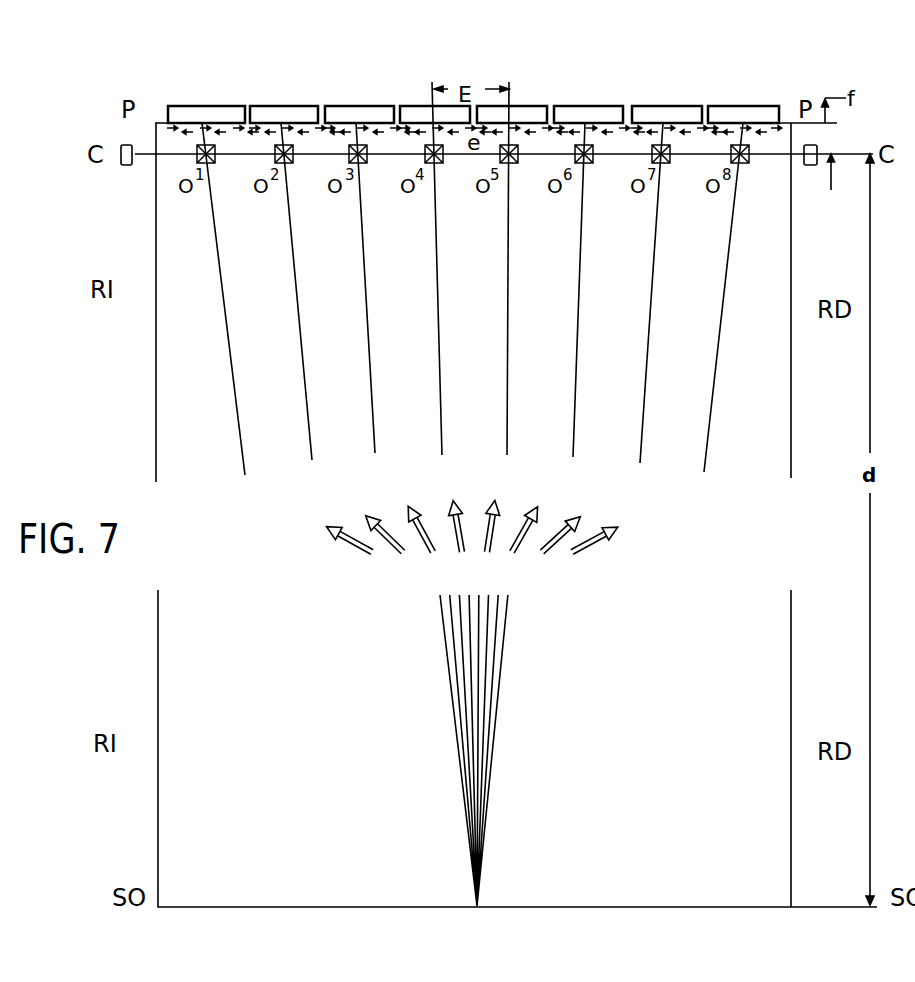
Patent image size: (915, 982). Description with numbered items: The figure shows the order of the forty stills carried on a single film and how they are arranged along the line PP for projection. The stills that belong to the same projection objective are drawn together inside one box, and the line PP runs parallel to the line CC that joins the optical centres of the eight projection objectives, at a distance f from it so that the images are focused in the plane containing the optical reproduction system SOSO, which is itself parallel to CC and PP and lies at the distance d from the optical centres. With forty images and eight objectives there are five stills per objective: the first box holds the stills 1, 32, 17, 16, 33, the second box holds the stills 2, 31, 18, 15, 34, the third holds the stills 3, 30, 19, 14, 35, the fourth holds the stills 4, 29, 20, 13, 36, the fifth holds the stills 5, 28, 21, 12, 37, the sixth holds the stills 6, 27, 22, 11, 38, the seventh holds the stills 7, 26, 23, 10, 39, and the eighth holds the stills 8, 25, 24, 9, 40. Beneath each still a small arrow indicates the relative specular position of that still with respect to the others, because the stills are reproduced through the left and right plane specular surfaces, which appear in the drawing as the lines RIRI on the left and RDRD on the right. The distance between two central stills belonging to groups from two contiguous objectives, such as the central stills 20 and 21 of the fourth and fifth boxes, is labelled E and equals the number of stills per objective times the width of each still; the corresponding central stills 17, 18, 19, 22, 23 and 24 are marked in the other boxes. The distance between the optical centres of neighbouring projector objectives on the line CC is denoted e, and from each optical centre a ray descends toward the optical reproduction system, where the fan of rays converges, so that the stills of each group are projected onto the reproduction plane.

The still 1 is at (169, 116).
The still 2 is at (259, 98).
The still 3 is at (330, 116).
The still 4 is at (410, 98).
The still 5 is at (485, 116).
The still 6 is at (563, 98).
The still 7 is at (637, 116).
The still 8 is at (722, 98).
The still 9 is at (749, 84).
The still 10 is at (685, 102).
The still 11 is at (607, 84).
The still 12 is at (530, 102).
The still 13 is at (453, 84).
The still 14 is at (378, 102).
The still 15 is at (303, 84).
The still 16 is at (220, 102).
The central still 17 is at (188, 106).
The central still 18 is at (278, 106).
The central still 19 is at (352, 106).
The central still 20 is at (422, 105).
The central still 21 is at (518, 105).
The central still 22 is at (587, 105).
The central still 23 is at (663, 105).
The central still 24 is at (738, 105).
The still 25 is at (723, 253).
The still 26 is at (643, 266).
The still 27 is at (568, 245).
The still 28 is at (490, 262).
The still 29 is at (418, 244).
The still 30 is at (343, 261).
The still 31 is at (277, 247).
The still 32 is at (192, 272).
The still 33 is at (205, 100).
The still 34 is at (296, 82).
The still 35 is at (367, 100).
The still 36 is at (447, 82).
The still 37 is at (524, 100).
The still 38 is at (602, 82).
The still 39 is at (678, 100).
The still 40 is at (755, 82).